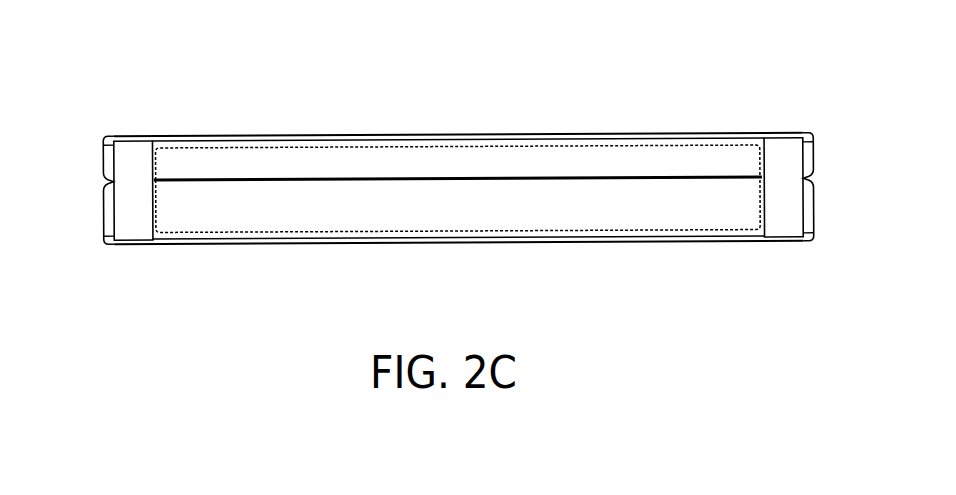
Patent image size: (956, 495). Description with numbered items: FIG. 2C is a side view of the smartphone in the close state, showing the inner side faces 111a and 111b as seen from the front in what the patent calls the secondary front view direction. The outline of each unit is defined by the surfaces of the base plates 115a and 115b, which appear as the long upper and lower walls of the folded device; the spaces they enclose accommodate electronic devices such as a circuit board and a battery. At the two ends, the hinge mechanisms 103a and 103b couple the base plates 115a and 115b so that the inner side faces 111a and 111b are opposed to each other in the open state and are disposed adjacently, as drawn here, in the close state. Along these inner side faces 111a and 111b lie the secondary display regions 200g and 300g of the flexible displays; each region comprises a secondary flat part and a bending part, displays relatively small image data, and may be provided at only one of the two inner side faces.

The hinge mechanism 103a is at (138, 232).
The hinge mechanism 103b is at (785, 229).
The base plate 115a is at (445, 238).
The base plate 115b is at (455, 136).
The inner side face 111a is at (548, 207).
The inner side face 111b is at (553, 155).
The secondary display region 200g is at (330, 110).
The secondary display region 300g is at (458, 132).